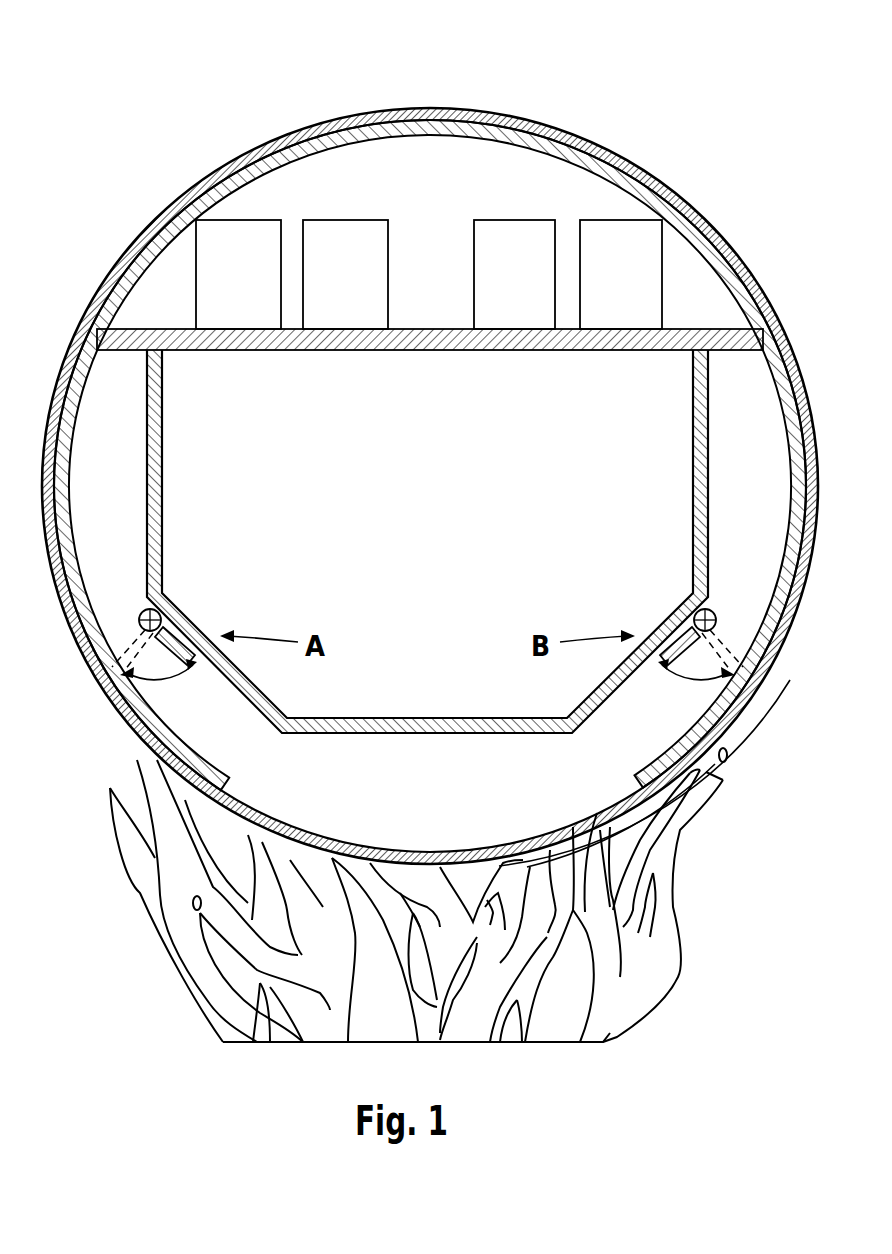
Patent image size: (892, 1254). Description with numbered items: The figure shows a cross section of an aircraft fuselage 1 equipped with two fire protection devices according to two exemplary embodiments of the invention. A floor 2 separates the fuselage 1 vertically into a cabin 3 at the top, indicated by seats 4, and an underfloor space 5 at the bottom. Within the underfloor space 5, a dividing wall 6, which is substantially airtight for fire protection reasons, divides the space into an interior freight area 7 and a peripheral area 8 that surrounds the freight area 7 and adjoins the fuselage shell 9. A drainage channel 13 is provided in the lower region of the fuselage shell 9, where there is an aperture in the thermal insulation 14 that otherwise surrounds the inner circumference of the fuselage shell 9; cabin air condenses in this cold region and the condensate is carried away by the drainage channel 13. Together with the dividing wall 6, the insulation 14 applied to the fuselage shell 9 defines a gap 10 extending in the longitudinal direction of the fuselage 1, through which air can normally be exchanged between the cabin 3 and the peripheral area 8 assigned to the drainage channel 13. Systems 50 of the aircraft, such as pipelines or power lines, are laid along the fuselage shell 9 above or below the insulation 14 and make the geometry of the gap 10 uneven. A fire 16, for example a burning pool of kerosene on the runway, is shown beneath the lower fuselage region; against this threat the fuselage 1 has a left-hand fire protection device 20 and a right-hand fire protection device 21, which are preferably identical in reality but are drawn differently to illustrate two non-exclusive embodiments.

The fuselage 1 is at (232, 80).
The floor 2 is at (738, 334).
The cabin 3 is at (438, 165).
The seats 4 is at (243, 240).
The underfloor space 5 is at (590, 791).
The dividing wall 6 is at (162, 463).
The freight area 7 is at (427, 479).
The peripheral area 8 is at (388, 816).
The fuselage shell 9 is at (742, 700).
The gap 10 is at (231, 734).
The drainage channel 13 is at (433, 860).
The insulation 14 is at (449, 455).
The fire 16 is at (655, 962).
The left-hand fire protection device 20 is at (206, 602).
The right-hand fire protection device 21 is at (649, 602).
The systems 50 is at (768, 603).